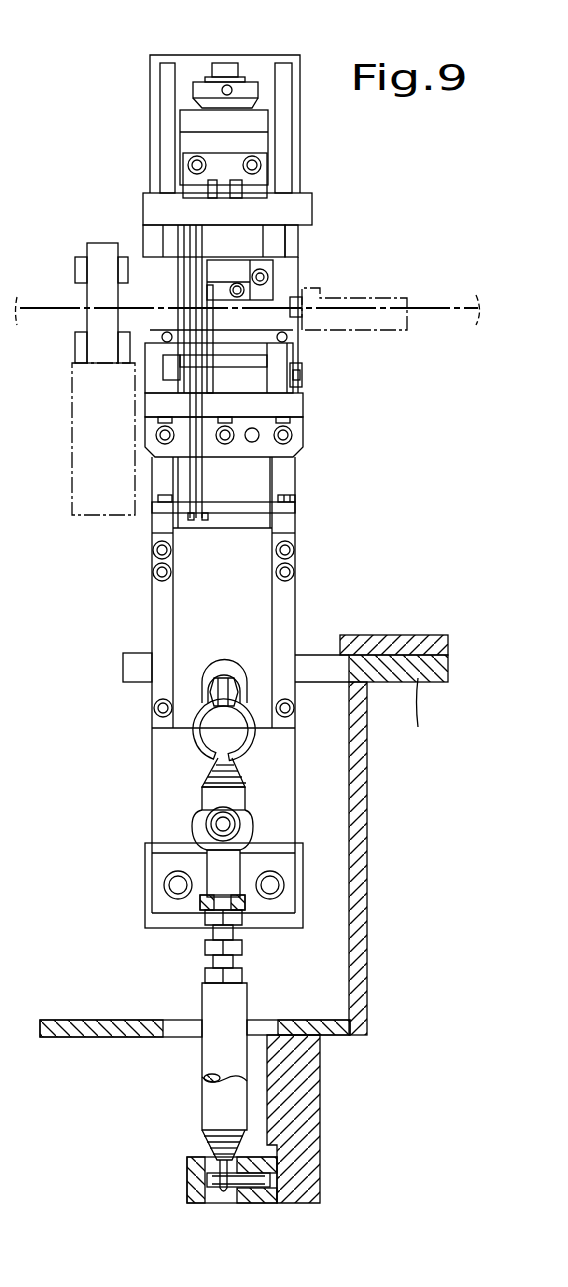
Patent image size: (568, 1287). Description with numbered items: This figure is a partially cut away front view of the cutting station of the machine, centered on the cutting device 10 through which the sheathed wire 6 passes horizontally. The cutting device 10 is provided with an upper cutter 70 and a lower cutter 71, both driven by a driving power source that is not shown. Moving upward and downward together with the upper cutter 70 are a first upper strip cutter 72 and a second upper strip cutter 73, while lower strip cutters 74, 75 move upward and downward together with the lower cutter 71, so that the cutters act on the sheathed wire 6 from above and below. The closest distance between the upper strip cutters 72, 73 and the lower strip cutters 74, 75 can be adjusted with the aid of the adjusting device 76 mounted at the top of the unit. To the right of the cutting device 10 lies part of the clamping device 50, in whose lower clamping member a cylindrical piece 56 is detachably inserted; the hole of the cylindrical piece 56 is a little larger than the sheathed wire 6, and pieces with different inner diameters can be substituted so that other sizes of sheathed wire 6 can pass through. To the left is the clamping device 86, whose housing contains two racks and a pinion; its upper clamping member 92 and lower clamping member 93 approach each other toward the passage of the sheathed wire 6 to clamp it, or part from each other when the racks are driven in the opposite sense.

The sheathed wire 6 is at (440, 306).
The cutting device 10 is at (135, 252).
The clamping device 50 is at (342, 297).
The cylindrical piece 56 is at (295, 297).
The upper cutter 70 is at (193, 243).
The lower cutter 71 is at (197, 372).
The first upper strip cutter 72 is at (205, 248).
The second upper strip cutter 73 is at (180, 262).
The lower strip cutter 74 is at (213, 327).
The lower strip cutter 75 is at (167, 350).
The adjusting device 76 is at (247, 76).
The clamping device 86 is at (72, 466).
The upper clamping member 92 is at (75, 267).
The lower clamping member 93 is at (80, 343).